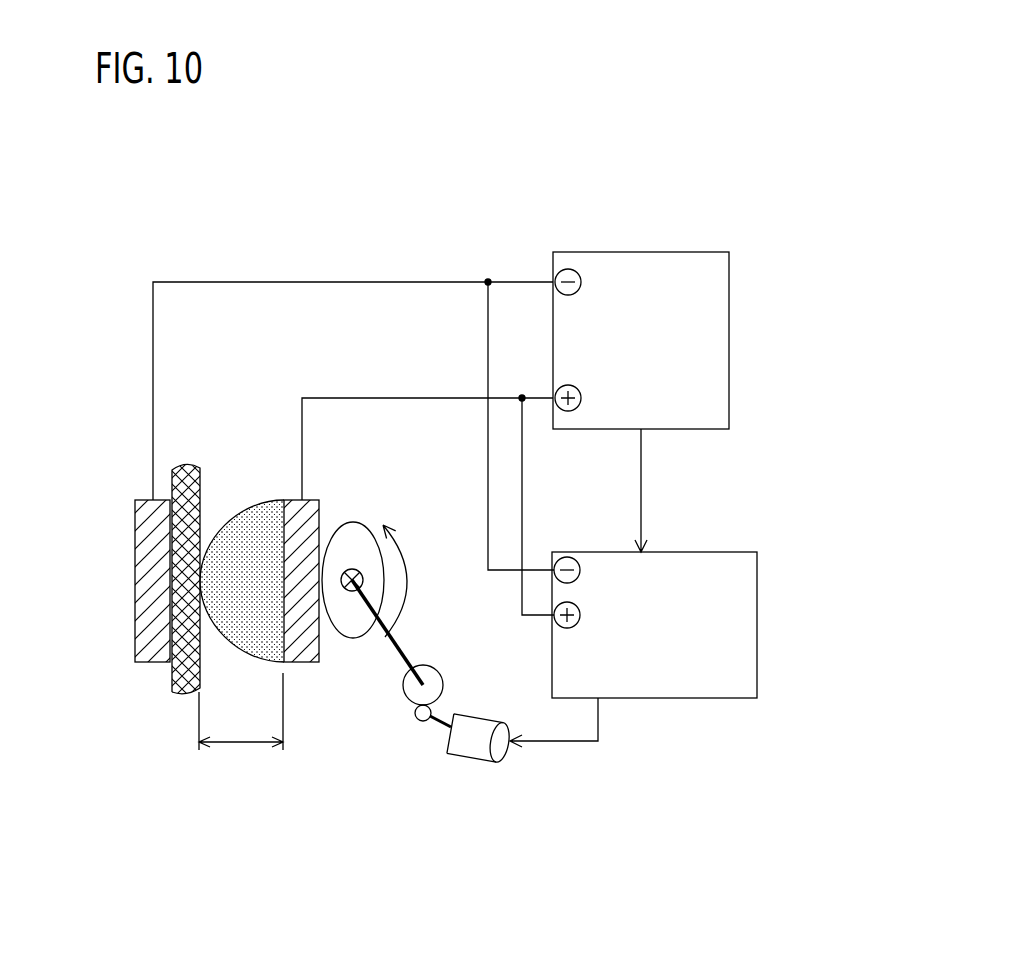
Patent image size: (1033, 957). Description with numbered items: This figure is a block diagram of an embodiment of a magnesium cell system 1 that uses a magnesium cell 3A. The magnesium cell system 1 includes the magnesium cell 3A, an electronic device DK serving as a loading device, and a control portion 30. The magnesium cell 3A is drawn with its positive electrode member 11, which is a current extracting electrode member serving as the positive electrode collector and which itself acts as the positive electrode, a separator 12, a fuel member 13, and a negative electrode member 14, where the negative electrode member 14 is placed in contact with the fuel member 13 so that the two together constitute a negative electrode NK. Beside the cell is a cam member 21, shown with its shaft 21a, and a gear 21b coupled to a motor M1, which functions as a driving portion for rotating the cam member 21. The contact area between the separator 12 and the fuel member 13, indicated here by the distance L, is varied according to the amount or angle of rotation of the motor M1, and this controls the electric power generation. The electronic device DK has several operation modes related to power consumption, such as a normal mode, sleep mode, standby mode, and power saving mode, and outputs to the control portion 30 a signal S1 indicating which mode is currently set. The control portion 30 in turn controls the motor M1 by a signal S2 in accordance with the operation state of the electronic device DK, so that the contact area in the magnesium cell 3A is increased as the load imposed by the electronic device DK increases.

The magnesium cell system 1 is at (450, 140).
The magnesium cell 3A is at (237, 413).
The positive electrode member 11 is at (312, 503).
The separator 12 is at (238, 525).
The fuel member 13 is at (165, 690).
The negative electrode member 14 is at (147, 663).
The negative electrode NK is at (188, 792).
The cam member 21 is at (357, 532).
The cam shaft 21a is at (352, 590).
The gear 21b is at (407, 700).
The motor M1 is at (472, 747).
The electronic device DK is at (642, 251).
The control portion 30 is at (711, 687).
The signal S1 is at (658, 490).
The signal S2 is at (575, 722).
The distance L is at (241, 711).